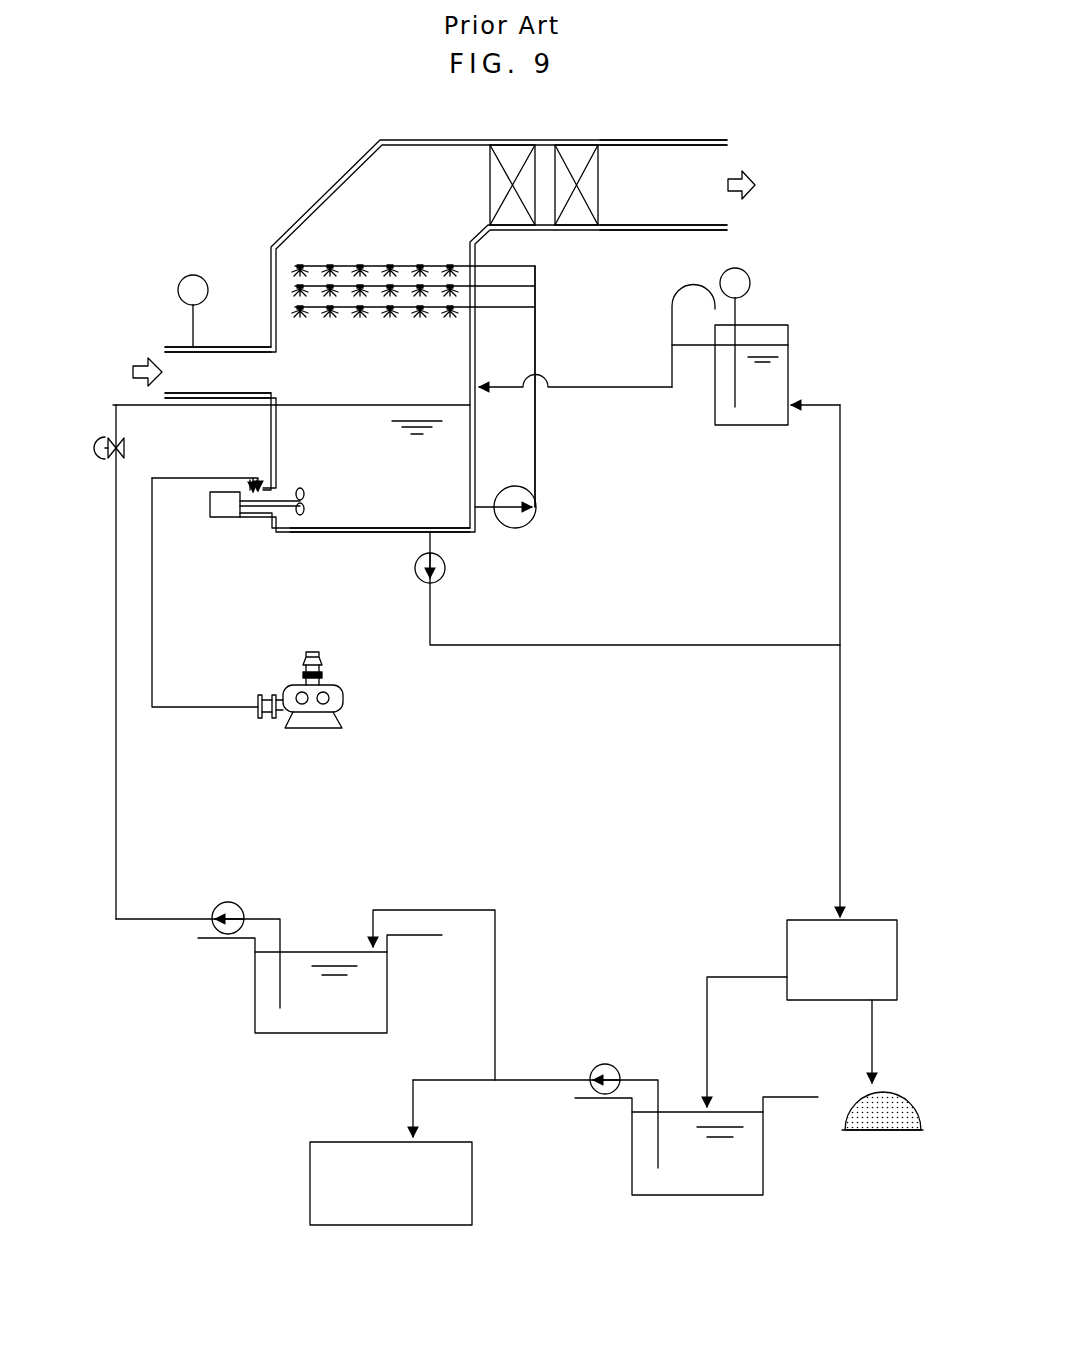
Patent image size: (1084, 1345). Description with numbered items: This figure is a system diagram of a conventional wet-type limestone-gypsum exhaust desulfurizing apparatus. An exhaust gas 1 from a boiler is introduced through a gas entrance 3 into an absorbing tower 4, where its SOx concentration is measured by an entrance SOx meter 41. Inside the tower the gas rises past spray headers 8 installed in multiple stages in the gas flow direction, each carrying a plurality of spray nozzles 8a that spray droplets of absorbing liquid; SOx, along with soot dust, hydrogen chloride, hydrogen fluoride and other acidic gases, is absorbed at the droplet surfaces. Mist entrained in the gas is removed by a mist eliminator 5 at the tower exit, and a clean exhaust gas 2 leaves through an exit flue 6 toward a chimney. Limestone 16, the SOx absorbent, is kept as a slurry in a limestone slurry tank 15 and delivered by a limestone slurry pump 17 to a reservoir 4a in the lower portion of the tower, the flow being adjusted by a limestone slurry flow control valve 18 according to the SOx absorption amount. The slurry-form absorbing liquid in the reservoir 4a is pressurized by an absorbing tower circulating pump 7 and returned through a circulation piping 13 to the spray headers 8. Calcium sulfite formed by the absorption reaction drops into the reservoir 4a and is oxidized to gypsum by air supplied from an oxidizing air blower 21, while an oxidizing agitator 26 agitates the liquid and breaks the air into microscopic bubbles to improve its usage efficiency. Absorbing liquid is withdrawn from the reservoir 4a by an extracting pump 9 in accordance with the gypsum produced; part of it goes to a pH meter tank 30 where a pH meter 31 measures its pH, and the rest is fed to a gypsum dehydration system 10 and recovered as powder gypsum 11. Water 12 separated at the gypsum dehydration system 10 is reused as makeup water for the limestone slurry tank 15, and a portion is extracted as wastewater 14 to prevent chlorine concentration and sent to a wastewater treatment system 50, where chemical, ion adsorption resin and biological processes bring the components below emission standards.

The exhaust gas 1 is at (137, 372).
The clean exhaust gas 2 is at (753, 185).
The gas entrance 3 is at (233, 349).
The absorbing tower 4 is at (284, 218).
The reservoir 4a is at (372, 533).
The mist eliminator 5 is at (576, 147).
The exit flue 6 is at (645, 140).
The absorbing tower circulating pump 7 is at (534, 514).
The spray header 8 is at (503, 265).
The spray nozzle 8a is at (365, 310).
The extracting pump 9 is at (445, 568).
The gypsum dehydration system 10 is at (805, 1000).
The powder gypsum 11 is at (890, 1092).
The water 12 is at (748, 975).
The circulation piping 13 is at (537, 345).
The wastewater 14 is at (442, 1077).
The limestone slurry tank 15 is at (255, 988).
The limestone 16 is at (316, 952).
The limestone slurry pump 17 is at (228, 902).
The limestone slurry flow control valve 18 is at (122, 448).
The oxidizing air blower 21 is at (312, 728).
The oxidizing agitator 26 is at (300, 516).
The pH meter tank 30 is at (750, 425).
The pH meter 31 is at (750, 283).
The entrance SOx meter 41 is at (178, 290).
The wastewater treatment system 50 is at (472, 1178).